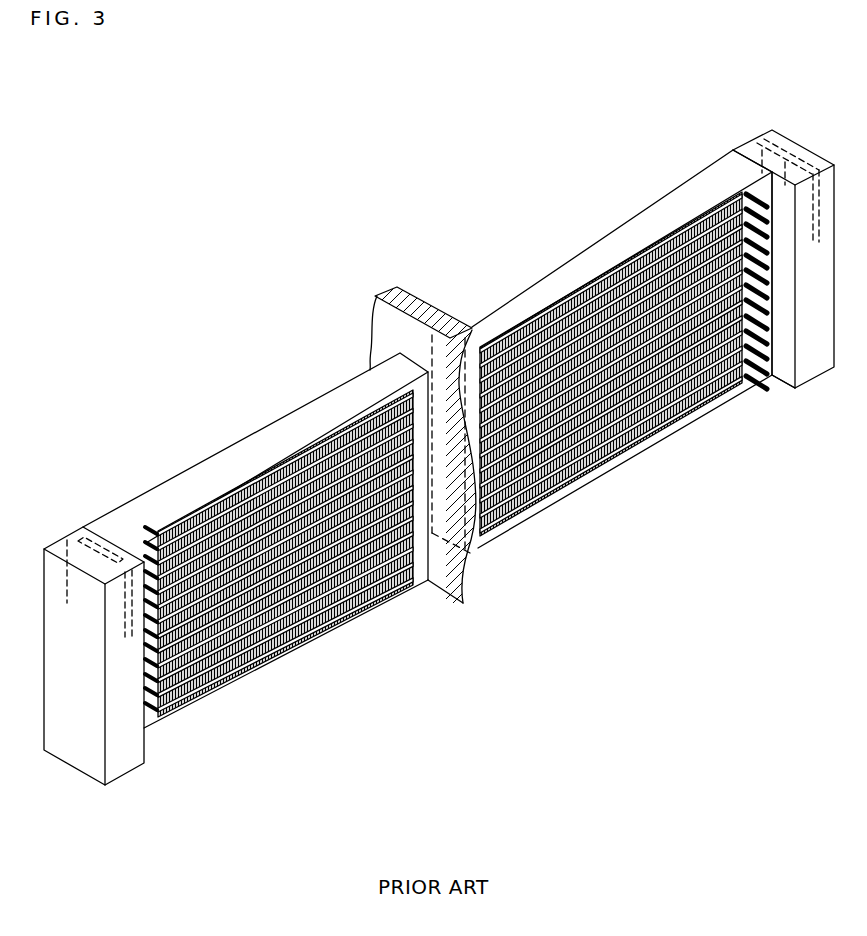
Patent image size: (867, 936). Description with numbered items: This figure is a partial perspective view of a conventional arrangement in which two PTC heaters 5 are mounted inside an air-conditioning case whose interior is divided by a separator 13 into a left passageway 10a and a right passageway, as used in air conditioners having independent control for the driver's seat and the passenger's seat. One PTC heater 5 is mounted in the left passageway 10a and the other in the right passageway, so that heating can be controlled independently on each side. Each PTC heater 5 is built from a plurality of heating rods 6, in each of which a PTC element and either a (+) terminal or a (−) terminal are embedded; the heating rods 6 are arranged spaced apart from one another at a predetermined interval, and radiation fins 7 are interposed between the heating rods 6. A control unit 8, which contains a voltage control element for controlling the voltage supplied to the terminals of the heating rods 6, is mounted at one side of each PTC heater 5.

The PTC heater 5 is at (232, 438).
The left passageway 10a is at (275, 406).
The heating rods 6 is at (195, 672).
The radiation fins 7 is at (224, 672).
The control unit 8 is at (78, 538).
The separator 13 is at (409, 293).